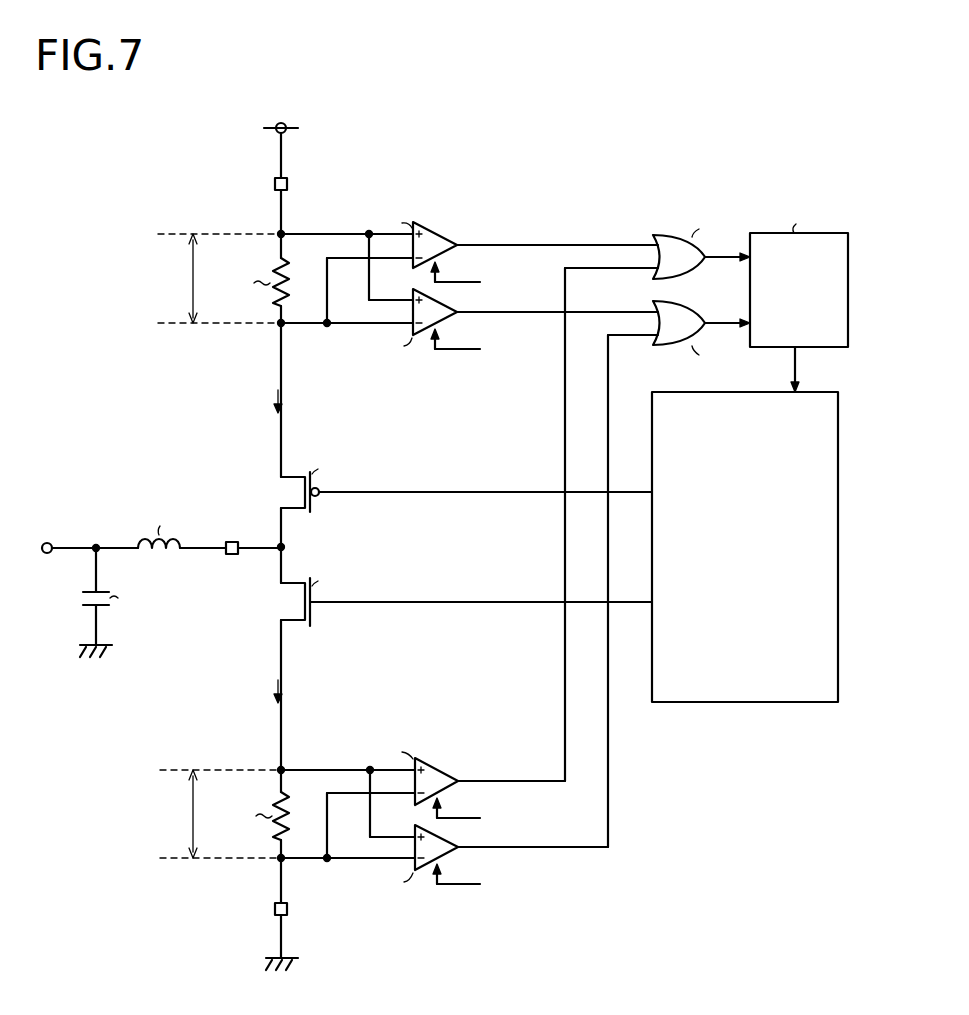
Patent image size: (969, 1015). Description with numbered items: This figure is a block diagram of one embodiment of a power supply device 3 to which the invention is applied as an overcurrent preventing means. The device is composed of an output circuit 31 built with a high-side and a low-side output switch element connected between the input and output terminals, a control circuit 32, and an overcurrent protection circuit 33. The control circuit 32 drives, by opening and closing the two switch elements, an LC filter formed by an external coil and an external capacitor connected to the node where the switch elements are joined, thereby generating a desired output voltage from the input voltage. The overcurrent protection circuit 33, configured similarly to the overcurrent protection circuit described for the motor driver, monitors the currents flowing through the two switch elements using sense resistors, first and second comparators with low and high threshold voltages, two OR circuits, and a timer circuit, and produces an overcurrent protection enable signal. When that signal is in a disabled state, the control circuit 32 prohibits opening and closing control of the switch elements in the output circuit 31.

The power supply circuit 3 is at (153, 194).
The output circuit 31 is at (361, 469).
The control circuit 32 is at (745, 703).
The overcurrent protection circuit 33 is at (565, 207).